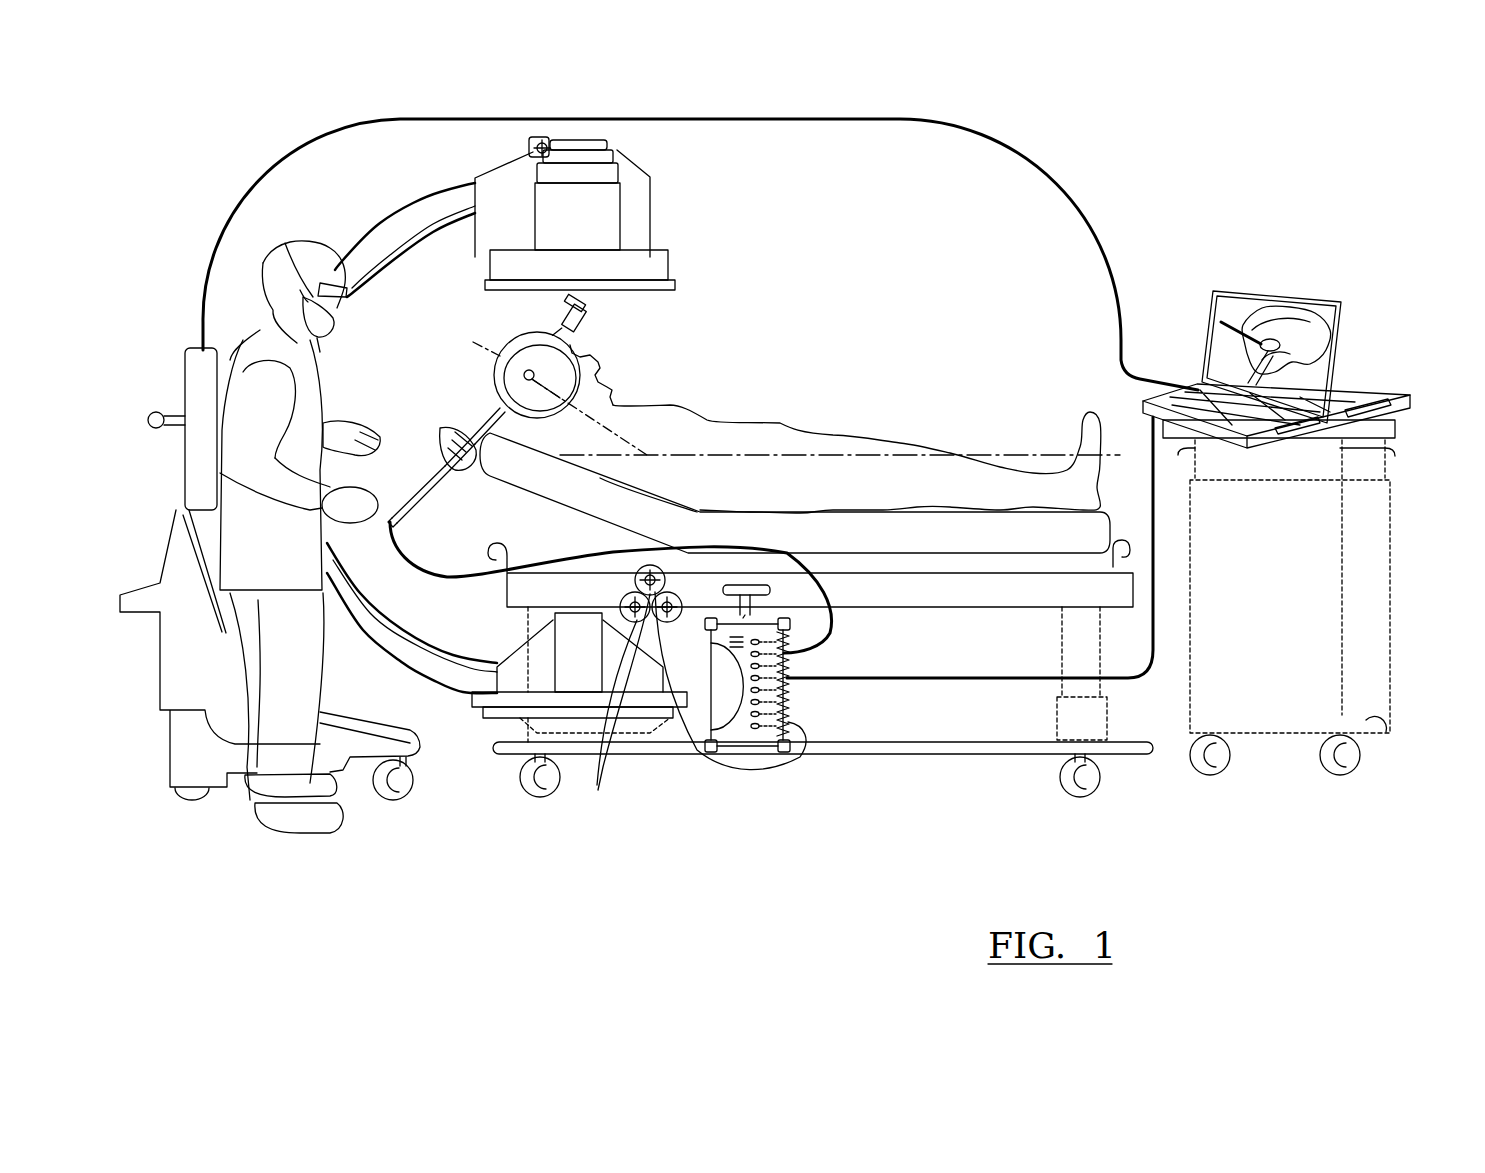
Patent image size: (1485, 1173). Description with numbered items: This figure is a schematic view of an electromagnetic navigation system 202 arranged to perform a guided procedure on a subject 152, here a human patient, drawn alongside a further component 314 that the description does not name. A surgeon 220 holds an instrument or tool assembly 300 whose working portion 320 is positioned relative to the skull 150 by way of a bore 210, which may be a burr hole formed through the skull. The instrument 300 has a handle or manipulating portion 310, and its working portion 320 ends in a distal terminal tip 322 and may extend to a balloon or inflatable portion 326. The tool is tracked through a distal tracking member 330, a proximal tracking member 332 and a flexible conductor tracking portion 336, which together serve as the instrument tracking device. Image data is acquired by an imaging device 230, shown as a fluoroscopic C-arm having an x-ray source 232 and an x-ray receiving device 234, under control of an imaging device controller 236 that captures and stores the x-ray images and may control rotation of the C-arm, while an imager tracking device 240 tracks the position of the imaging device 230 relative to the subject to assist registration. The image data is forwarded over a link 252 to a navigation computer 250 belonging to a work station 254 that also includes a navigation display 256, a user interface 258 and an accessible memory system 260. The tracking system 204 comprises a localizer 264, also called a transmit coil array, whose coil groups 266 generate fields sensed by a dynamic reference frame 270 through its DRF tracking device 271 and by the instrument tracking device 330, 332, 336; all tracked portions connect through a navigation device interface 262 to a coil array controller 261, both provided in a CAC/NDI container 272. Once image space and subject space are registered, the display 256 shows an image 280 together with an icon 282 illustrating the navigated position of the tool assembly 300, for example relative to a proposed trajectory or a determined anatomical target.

The skull 150 is at (520, 342).
The subject 152 is at (771, 415).
The electromagnetic navigation system 202 is at (1149, 160).
The tracking system 204 is at (773, 817).
The bore 210 is at (528, 370).
The surgeon 220 is at (263, 331).
The imaging device 230 is at (362, 233).
The x-ray source 232 is at (567, 652).
The x-ray receiving device 234 is at (642, 199).
The imaging device controller 236 is at (198, 362).
The imager tracking device 240 is at (528, 140).
The navigation computer 250 is at (1323, 423).
The link 252 is at (1023, 147).
The work station 254 is at (1287, 227).
The navigation display 256 is at (1222, 282).
The user interface 258 is at (1272, 405).
The accessible memory system 260 is at (1370, 400).
The coil array controller 261 is at (723, 762).
The navigation device interface 262 is at (789, 722).
The localizer 264 is at (627, 590).
The coil groups 266 is at (610, 708).
The dynamic reference frame 270 is at (590, 330).
The DRF tracking device 271 is at (590, 307).
The CAC/NDI container 272 is at (740, 735).
The image 280 is at (1276, 325).
The icon 282 is at (1221, 322).
The instrument 300 is at (450, 395).
The handle portion 310 is at (395, 530).
The patient support / table 314 is at (902, 538).
The working portion 320 is at (430, 452).
The distal terminal tip 322 is at (495, 408).
The balloon portion 326 is at (453, 431).
The distal tracking member 330 is at (497, 434).
The proximal tracking member 332 is at (423, 493).
The flexible conductor tracking portion 336 is at (455, 475).